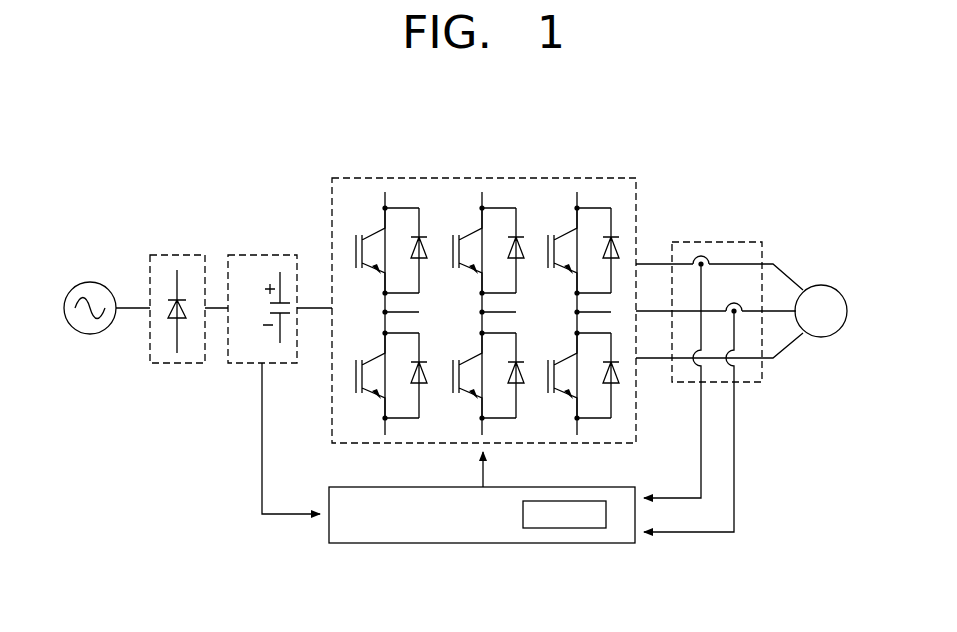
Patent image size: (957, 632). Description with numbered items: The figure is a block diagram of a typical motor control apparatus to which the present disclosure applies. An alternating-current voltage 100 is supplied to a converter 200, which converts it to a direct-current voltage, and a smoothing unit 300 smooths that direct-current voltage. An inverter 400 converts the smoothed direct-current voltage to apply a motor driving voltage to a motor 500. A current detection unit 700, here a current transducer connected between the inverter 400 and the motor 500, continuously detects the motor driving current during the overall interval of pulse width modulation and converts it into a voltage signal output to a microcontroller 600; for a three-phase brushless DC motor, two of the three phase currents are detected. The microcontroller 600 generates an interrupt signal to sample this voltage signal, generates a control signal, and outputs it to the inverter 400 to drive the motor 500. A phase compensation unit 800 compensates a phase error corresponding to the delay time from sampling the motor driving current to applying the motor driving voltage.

The alternating-current voltage 100 is at (90, 282).
The converter 200 is at (177, 255).
The smoothing unit 300 is at (262, 255).
The inverter 400 is at (485, 178).
The motor 500 is at (821, 285).
The microcontroller 600 is at (483, 543).
The current detection unit 700 is at (717, 242).
The phase compensation unit 800 is at (567, 528).